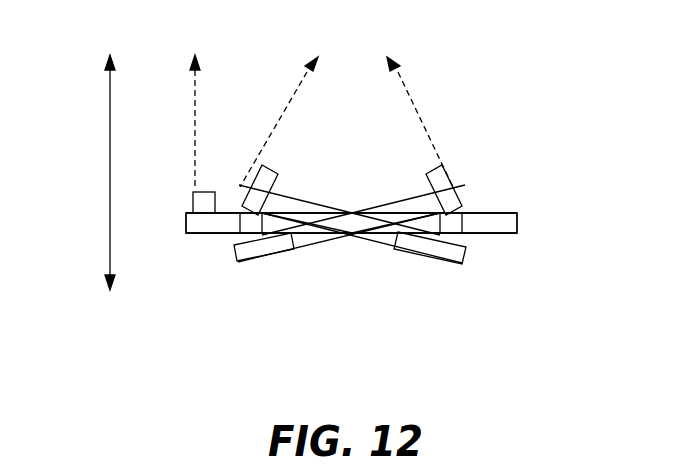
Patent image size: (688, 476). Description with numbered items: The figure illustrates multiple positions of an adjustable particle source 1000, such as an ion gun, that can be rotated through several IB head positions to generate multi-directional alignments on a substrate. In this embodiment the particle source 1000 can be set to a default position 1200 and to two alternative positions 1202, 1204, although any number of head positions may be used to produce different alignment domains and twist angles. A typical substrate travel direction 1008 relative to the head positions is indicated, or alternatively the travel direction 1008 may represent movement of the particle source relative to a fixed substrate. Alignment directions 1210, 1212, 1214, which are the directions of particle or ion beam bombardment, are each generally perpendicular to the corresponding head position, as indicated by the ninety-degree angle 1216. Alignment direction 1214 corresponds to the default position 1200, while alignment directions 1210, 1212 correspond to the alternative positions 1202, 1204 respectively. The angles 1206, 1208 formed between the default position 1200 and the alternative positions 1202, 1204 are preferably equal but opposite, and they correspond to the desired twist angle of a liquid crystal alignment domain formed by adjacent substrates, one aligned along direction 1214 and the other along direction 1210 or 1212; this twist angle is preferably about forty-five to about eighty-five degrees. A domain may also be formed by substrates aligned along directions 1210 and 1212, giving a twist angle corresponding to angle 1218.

The particle source 1000 is at (348, 313).
The substrate travel direction 1008 is at (109, 185).
The default position 1200 is at (537, 223).
The alternative position 1202 is at (537, 182).
The alternative position 1204 is at (537, 265).
The angle 1206 is at (235, 243).
The angle 1208 is at (240, 210).
The alignment direction 1210 is at (408, 93).
The alignment direction 1212 is at (293, 93).
The alignment direction 1214 is at (195, 87).
The angle 1216 is at (193, 196).
The angle 1218 is at (410, 242).